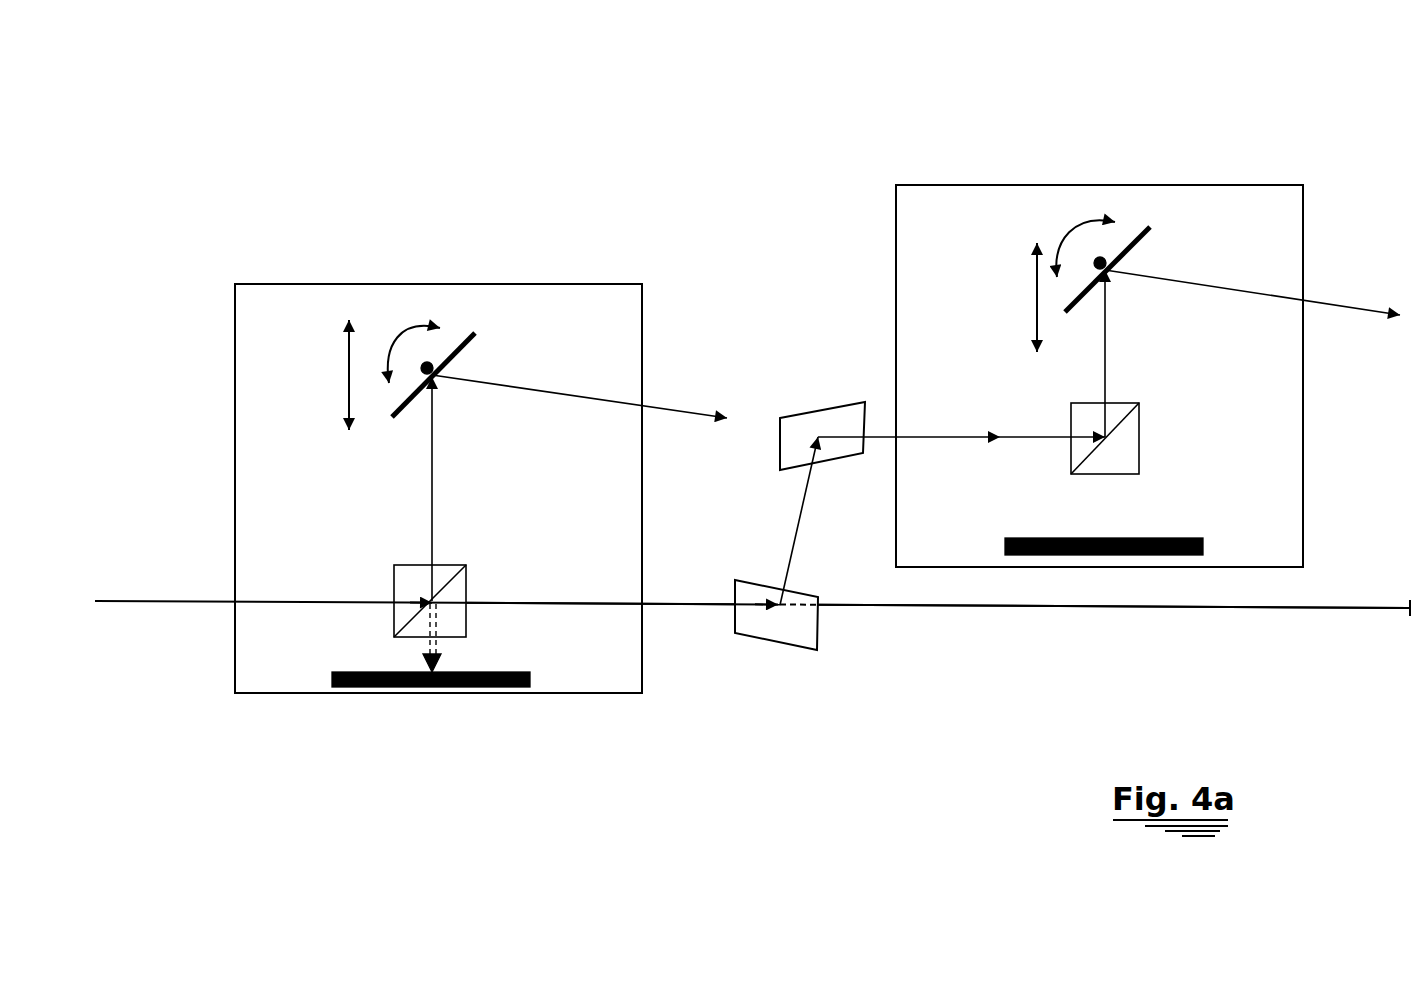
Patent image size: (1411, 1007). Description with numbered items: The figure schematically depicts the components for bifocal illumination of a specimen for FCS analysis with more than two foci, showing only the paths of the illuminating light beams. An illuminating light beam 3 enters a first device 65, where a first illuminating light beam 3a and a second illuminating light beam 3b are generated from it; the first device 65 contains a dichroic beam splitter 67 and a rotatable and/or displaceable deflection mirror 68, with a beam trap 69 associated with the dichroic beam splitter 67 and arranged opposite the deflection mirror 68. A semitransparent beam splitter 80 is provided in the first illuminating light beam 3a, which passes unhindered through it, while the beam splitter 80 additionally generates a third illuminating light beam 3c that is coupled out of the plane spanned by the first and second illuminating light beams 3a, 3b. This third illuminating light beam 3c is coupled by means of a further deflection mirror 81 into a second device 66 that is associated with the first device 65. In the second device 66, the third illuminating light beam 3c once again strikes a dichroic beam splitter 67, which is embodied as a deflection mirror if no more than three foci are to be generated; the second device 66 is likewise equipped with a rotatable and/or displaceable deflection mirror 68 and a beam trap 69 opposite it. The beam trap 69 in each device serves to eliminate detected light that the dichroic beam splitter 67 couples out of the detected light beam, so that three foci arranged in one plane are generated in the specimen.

The illuminating light beam 3 is at (146, 600).
The first illuminating light beam 3a is at (568, 601).
The second illuminating light beam 3b is at (670, 408).
The third illuminating light beam 3c is at (1373, 258).
The first device 65 is at (513, 242).
The second device 66 is at (1092, 121).
The dichroic beam splitter 67 is at (393, 578).
The deflection mirror 68 is at (473, 333).
The beam trap 69 is at (433, 690).
The semitransparent beam splitter 80 is at (755, 635).
The deflection mirror 81 is at (812, 410).